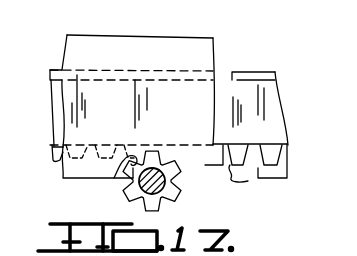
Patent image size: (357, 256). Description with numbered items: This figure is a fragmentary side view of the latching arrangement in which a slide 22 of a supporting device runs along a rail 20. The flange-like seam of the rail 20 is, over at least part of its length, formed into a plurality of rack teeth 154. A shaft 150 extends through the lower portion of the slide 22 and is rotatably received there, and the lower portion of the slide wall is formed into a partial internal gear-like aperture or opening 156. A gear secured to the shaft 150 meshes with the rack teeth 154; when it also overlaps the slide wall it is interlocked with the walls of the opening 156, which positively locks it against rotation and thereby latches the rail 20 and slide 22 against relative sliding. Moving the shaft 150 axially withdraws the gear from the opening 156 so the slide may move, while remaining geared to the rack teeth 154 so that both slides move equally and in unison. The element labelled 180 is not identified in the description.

The slide 22 is at (170, 40).
The rail 20 is at (232, 80).
The rack teeth 154 is at (261, 166).
The partial internal gear-like opening 156 is at (118, 180).
The pawl 180 is at (124, 191).
The shaft 150 is at (182, 193).